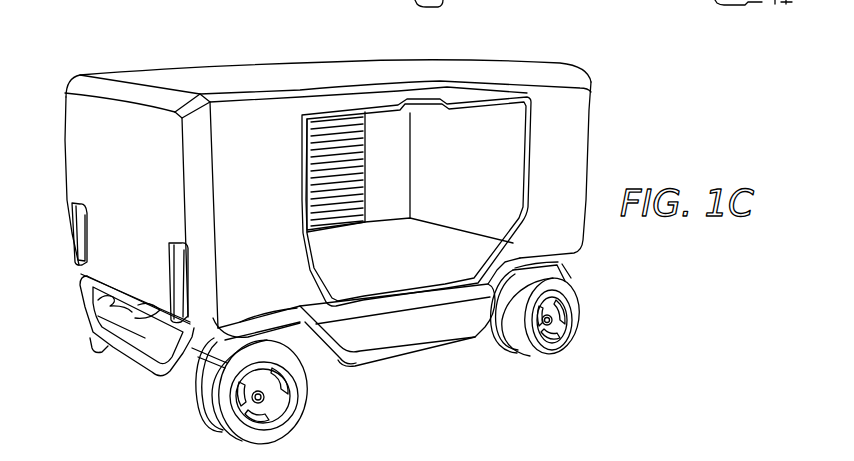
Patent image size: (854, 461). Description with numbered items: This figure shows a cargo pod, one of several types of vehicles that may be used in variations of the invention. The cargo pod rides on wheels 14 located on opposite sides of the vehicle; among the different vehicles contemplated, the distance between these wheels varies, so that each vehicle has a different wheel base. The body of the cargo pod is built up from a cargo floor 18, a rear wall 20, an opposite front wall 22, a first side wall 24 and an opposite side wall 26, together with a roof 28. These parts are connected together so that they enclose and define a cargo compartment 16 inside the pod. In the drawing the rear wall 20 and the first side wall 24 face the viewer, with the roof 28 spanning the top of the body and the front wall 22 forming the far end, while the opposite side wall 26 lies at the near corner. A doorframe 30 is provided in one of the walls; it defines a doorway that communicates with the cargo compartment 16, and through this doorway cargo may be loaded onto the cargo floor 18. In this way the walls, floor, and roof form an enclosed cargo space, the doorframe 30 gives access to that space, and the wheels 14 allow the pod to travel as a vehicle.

The wheels 14 is at (117, 371).
The cargo compartment 16 is at (480, 187).
The cargo floor 18 is at (402, 268).
The rear wall 20 is at (103, 167).
The front wall 22 is at (595, 97).
The first side wall 24 is at (272, 219).
The opposite side wall 26 is at (63, 110).
The roof 28 is at (293, 82).
The doorframe 30 is at (530, 121).